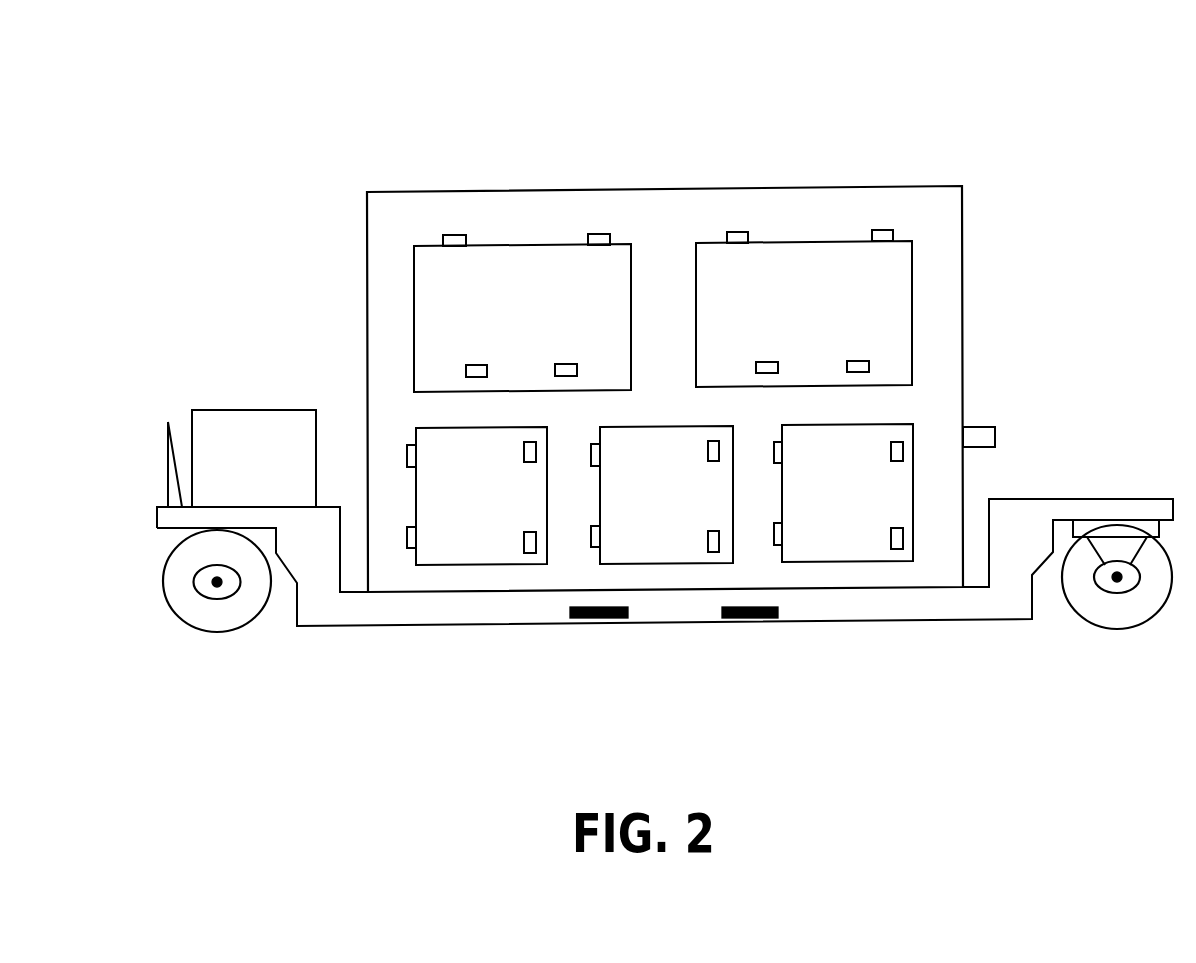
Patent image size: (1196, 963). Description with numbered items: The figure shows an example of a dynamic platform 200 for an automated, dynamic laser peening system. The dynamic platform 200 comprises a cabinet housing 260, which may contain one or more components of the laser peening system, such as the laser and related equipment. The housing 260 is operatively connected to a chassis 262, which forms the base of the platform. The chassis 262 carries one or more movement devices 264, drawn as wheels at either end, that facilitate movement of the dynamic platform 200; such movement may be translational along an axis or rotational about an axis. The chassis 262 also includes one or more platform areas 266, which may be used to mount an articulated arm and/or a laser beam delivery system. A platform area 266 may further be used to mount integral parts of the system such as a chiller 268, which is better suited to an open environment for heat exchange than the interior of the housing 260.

The dynamic platform 200 is at (1004, 132).
The cabinet housing 260 is at (622, 192).
The chassis 262 is at (898, 607).
The movement devices 264 is at (218, 632).
The platform areas 266 is at (1083, 499).
The chiller 268 is at (243, 410).